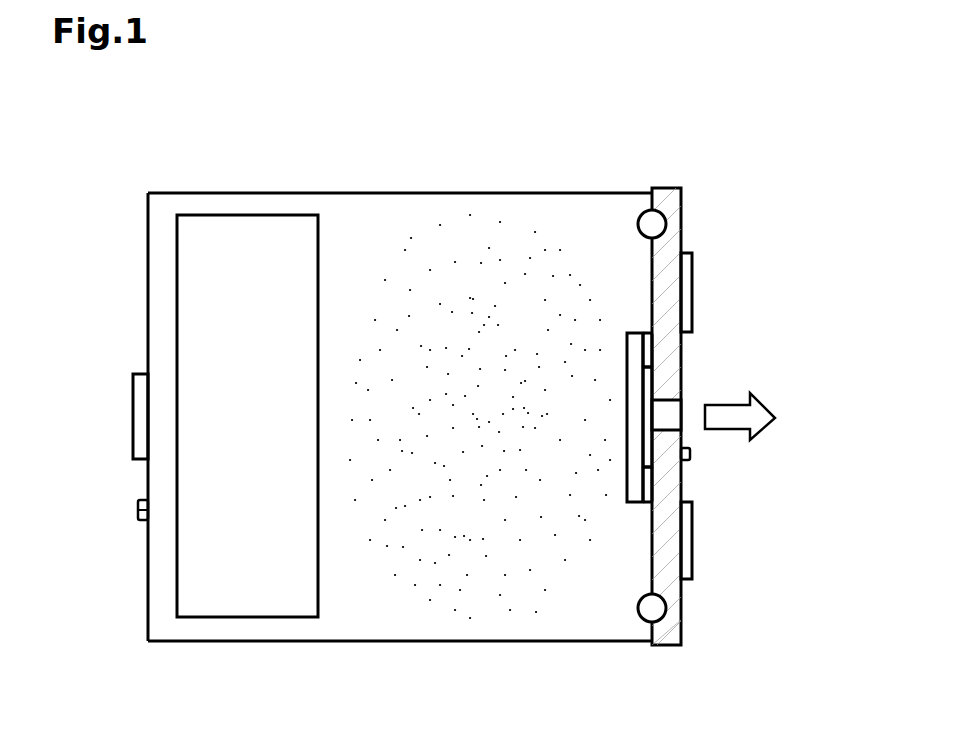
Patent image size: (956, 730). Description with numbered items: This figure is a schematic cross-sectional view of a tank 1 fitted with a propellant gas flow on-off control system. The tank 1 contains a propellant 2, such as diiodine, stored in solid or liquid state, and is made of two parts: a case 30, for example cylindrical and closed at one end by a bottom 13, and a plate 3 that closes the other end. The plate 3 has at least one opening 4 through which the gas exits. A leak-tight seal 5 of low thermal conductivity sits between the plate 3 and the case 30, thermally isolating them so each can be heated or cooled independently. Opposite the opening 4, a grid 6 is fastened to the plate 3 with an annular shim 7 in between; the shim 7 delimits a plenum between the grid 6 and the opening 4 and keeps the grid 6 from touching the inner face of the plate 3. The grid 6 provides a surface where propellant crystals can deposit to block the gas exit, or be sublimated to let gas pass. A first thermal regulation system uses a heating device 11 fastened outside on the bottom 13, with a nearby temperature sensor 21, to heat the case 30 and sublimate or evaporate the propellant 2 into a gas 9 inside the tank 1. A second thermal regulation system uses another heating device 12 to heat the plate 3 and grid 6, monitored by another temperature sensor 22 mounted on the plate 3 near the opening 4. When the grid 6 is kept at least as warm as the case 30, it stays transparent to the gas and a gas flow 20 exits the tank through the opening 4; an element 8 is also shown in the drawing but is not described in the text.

The tank 1 is at (354, 382).
The propellant 2 is at (245, 233).
The plate 3 is at (660, 195).
The opening 4 is at (668, 420).
The leak-tight seal 5 is at (638, 227).
The grid 6 is at (635, 382).
The shim 7 is at (645, 345).
The shield / support 8 is at (643, 448).
The gas 9 is at (481, 488).
The heating device 11 is at (140, 398).
The other heating device 12 is at (686, 273).
The bottom 13 is at (148, 594).
The gas flow 20 is at (758, 412).
The temperature sensor 21 is at (140, 508).
The other temperature sensor 22 is at (688, 455).
The case 30 is at (430, 193).